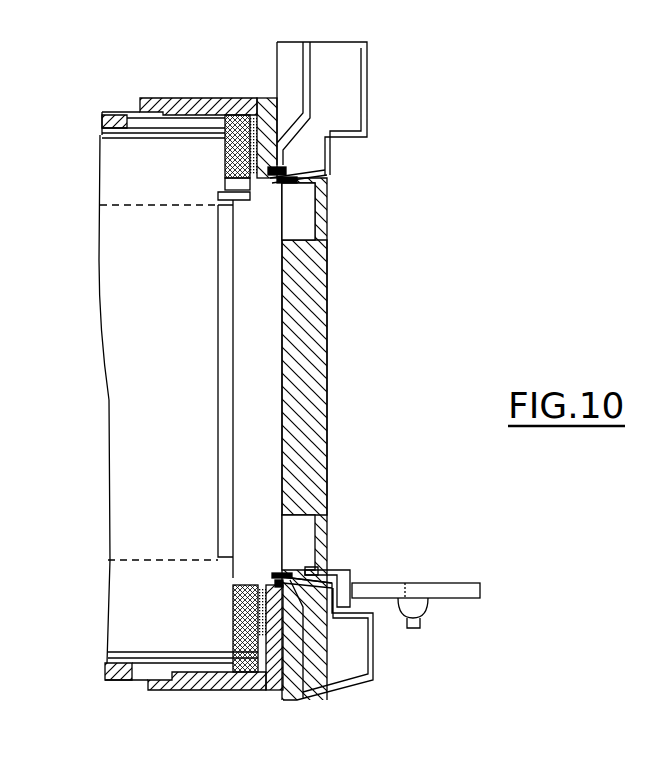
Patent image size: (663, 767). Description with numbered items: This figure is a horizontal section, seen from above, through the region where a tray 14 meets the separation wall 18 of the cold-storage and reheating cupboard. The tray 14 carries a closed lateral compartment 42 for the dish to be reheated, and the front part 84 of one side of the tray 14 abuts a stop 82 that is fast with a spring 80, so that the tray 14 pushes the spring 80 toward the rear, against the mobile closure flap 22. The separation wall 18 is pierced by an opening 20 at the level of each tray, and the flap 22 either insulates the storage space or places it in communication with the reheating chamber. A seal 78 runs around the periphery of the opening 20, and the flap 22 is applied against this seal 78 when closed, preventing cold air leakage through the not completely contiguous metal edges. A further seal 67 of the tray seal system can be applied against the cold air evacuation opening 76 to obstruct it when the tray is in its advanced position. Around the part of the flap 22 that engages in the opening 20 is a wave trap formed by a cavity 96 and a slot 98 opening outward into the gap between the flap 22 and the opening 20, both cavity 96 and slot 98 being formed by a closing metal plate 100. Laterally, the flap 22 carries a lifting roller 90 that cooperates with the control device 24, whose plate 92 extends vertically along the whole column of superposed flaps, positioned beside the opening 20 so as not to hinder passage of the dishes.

The tray 14 is at (106, 583).
The separation wall 18 is at (369, 80).
The opening 20 is at (334, 173).
The mobile closure flap 22 is at (314, 372).
The control device 24 is at (441, 606).
The lateral compartment 42 is at (168, 392).
The seal 67 is at (263, 153).
The cold air evacuation opening 76 is at (270, 130).
The seal 78 is at (290, 170).
The spring 80 is at (262, 193).
The stop 82 is at (224, 181).
The front part 84 is at (218, 197).
The lifting roller 90 is at (343, 580).
The plate 92 is at (413, 587).
The cavity 96 is at (312, 229).
The slot 98 is at (297, 185).
The metal plate 100 is at (272, 540).